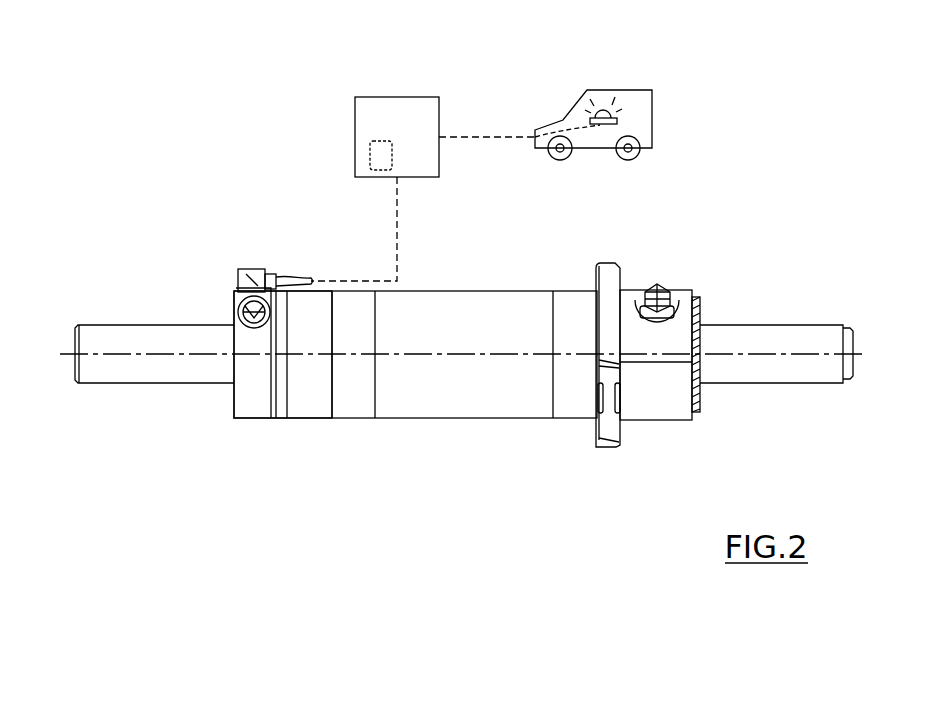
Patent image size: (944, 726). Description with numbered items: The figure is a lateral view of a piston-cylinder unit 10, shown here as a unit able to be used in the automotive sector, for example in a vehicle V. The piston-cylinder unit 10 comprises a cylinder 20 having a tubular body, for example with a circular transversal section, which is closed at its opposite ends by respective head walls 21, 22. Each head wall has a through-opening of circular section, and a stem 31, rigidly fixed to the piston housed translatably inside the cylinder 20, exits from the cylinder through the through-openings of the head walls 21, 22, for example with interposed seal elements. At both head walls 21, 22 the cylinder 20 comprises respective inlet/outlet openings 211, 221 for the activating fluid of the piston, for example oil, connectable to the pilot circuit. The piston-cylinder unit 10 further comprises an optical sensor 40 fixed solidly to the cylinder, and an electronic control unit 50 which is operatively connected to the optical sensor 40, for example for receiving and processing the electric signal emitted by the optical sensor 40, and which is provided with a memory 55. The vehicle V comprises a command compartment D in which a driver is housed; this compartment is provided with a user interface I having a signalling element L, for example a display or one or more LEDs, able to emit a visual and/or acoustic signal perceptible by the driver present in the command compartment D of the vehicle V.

The piston-cylinder unit 10 is at (181, 152).
The cylinder 20 is at (453, 322).
The head wall 21 is at (253, 405).
The inlet/outlet opening 211 is at (233, 300).
The head wall 22 is at (683, 290).
The inlet/outlet opening 221 is at (657, 283).
The stem 31 is at (770, 335).
The optical sensor 40 is at (250, 282).
The electronic control unit 50 is at (368, 110).
The memory 55 is at (377, 157).
The signalling element L is at (608, 110).
The vehicle V is at (645, 85).
The command compartment D is at (627, 112).
The user interface I is at (618, 121).